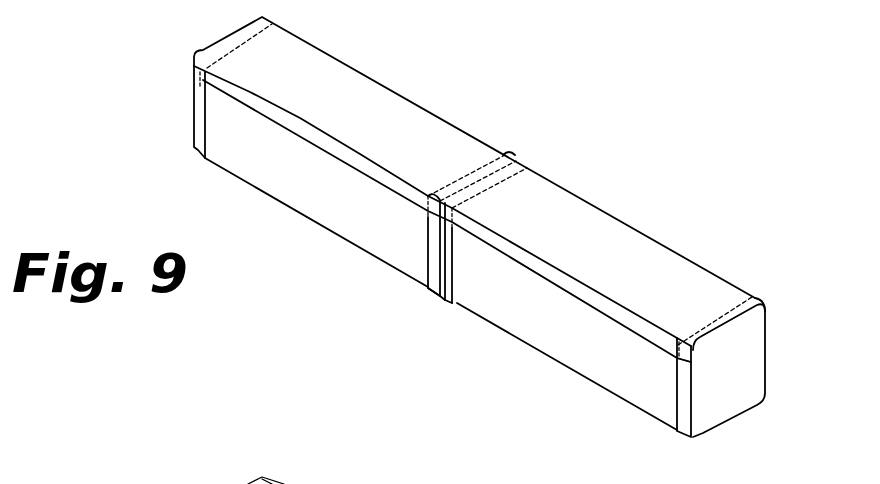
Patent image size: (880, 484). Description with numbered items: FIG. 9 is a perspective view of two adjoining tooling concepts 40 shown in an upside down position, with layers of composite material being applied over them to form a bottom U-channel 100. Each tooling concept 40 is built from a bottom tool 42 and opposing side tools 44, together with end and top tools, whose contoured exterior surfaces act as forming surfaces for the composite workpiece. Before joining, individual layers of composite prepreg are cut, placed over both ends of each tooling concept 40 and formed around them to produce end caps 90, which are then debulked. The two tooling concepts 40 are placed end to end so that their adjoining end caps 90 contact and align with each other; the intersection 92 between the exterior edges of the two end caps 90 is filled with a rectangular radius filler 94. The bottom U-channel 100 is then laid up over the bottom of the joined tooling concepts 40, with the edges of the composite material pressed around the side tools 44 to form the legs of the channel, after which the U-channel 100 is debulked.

The tooling concept 40 is at (342, 254).
The bottom tool 42 is at (396, 110).
The side tool 44 is at (340, 193).
The end cap 90 is at (200, 103).
The intersection 92 is at (431, 304).
The rectangular radius filler 94 is at (443, 300).
The bottom U-channel 100 is at (310, 77).